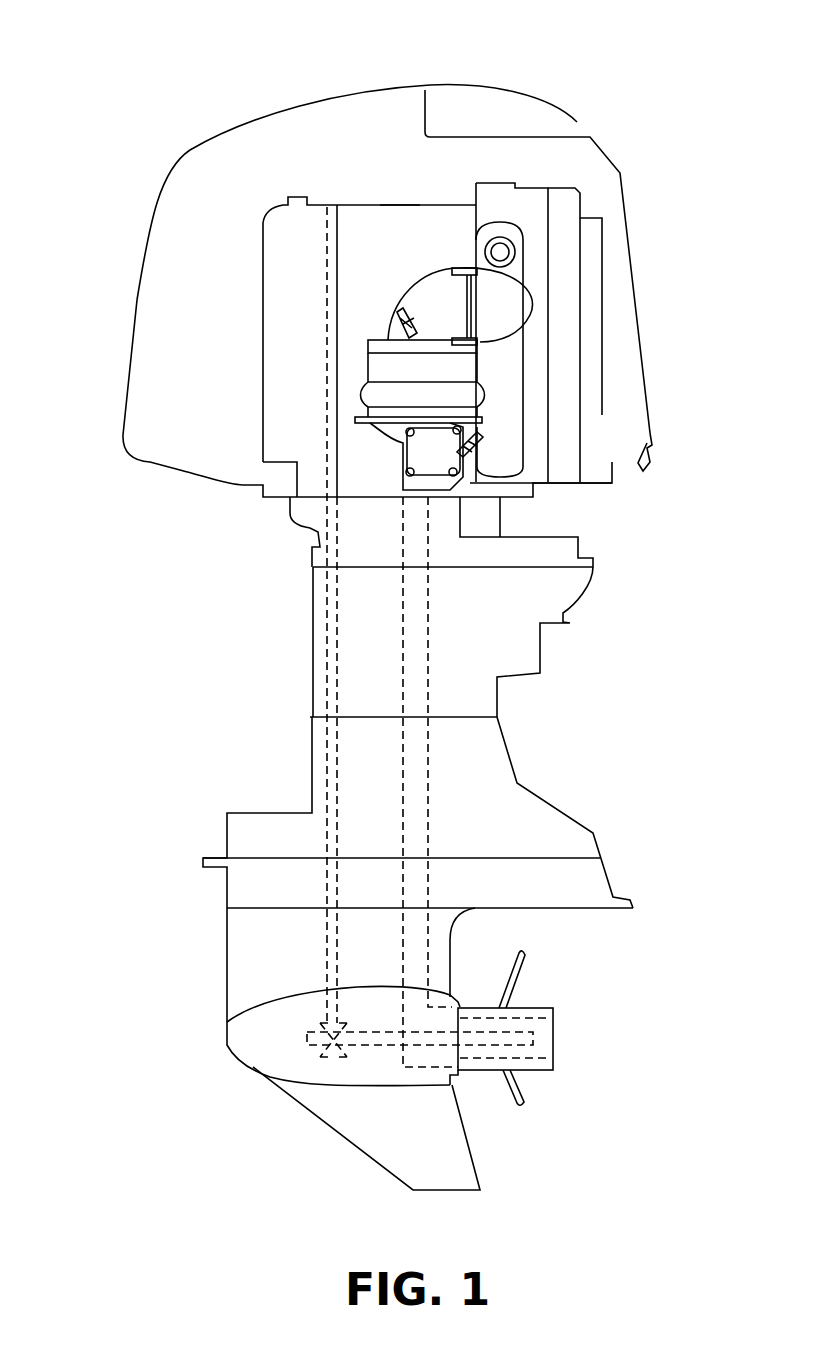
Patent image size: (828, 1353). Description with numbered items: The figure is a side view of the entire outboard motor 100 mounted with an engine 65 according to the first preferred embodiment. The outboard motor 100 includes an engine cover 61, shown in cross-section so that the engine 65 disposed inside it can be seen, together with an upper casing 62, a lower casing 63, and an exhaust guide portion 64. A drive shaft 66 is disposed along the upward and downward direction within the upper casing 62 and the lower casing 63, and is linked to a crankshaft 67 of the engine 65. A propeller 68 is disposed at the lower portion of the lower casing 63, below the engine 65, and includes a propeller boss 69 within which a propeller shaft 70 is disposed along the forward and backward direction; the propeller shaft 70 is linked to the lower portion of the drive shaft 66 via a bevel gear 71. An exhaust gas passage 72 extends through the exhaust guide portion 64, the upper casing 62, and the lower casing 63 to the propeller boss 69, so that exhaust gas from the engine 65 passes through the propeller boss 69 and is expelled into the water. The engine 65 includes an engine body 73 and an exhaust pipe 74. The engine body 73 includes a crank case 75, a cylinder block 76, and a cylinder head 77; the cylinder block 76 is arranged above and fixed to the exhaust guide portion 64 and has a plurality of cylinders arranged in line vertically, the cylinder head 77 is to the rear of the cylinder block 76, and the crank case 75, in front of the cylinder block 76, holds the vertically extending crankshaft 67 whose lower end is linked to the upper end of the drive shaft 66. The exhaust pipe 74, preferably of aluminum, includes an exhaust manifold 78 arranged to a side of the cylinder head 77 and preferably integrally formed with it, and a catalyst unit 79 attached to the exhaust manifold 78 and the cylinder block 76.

The outboard motor 100 is at (193, 88).
The engine cover 61 is at (188, 152).
The upper casing 62 is at (313, 607).
The lower casing 63 is at (312, 740).
The exhaust guide portion 64 is at (320, 538).
The engine 65 is at (250, 337).
The drive shaft 66 is at (327, 788).
The crankshaft 67 is at (323, 398).
The propeller 68 is at (568, 1040).
The propeller boss 69 is at (480, 1070).
The propeller shaft 70 is at (383, 1047).
The bevel gear 71 is at (317, 1053).
The exhaust gas passage 72 is at (428, 653).
The engine body 73 is at (355, 205).
The exhaust pipe 74 is at (434, 290).
The crank case 75 is at (282, 212).
The cylinder block 76 is at (394, 203).
The cylinder head 77 is at (533, 187).
The exhaust manifold 78 is at (513, 365).
The catalyst unit 79 is at (470, 397).